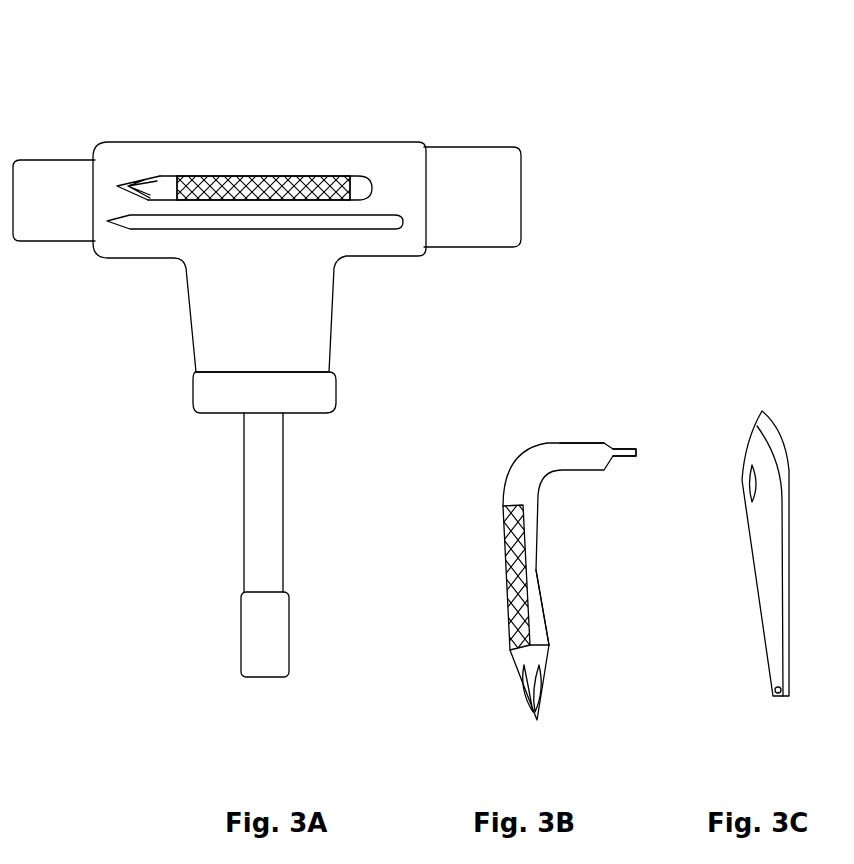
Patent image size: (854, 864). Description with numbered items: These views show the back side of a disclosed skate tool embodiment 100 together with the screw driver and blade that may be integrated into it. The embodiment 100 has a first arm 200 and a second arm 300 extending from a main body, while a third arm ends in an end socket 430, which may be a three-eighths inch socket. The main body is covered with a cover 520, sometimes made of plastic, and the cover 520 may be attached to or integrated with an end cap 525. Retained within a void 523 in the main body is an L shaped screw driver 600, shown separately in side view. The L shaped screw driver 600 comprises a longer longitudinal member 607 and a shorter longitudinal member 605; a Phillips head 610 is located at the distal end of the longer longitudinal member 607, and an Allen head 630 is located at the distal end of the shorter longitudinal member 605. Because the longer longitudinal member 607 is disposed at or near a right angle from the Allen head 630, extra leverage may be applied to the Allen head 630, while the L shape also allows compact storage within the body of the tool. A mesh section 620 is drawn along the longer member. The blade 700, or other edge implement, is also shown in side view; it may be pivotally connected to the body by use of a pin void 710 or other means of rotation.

In FIG. 3A, the embodiment 100 is at (157, 112).
In FIG. 3A, the first arm 200 is at (488, 200).
In FIG. 3A, the second arm 300 is at (47, 178).
In FIG. 3A, the end socket 430 is at (253, 645).
In FIG. 3A, the cover 520 is at (235, 163).
In FIG. 3A, the void 523 is at (285, 174).
In FIG. 3A, the end cap 525 is at (297, 390).
In FIG. 3A, the L shaped screw driver 600 is at (355, 180).
In FIG. 3B, the L shaped screw driver 600 is at (575, 460).
In FIG. 3B, the shorter longitudinal member 605 is at (557, 447).
In FIG. 3B, the longer longitudinal member 607 is at (545, 586).
In FIG. 3B, the Phillips head 610 is at (510, 691).
In FIG. 3B, the mesh section 620 is at (505, 560).
In FIG. 3B, the Allen head 630 is at (634, 466).
In FIG. 3A, the blade 700 is at (155, 224).
In FIG. 3C, the blade 700 is at (748, 445).
In FIG. 3C, the pin void 710 is at (764, 696).